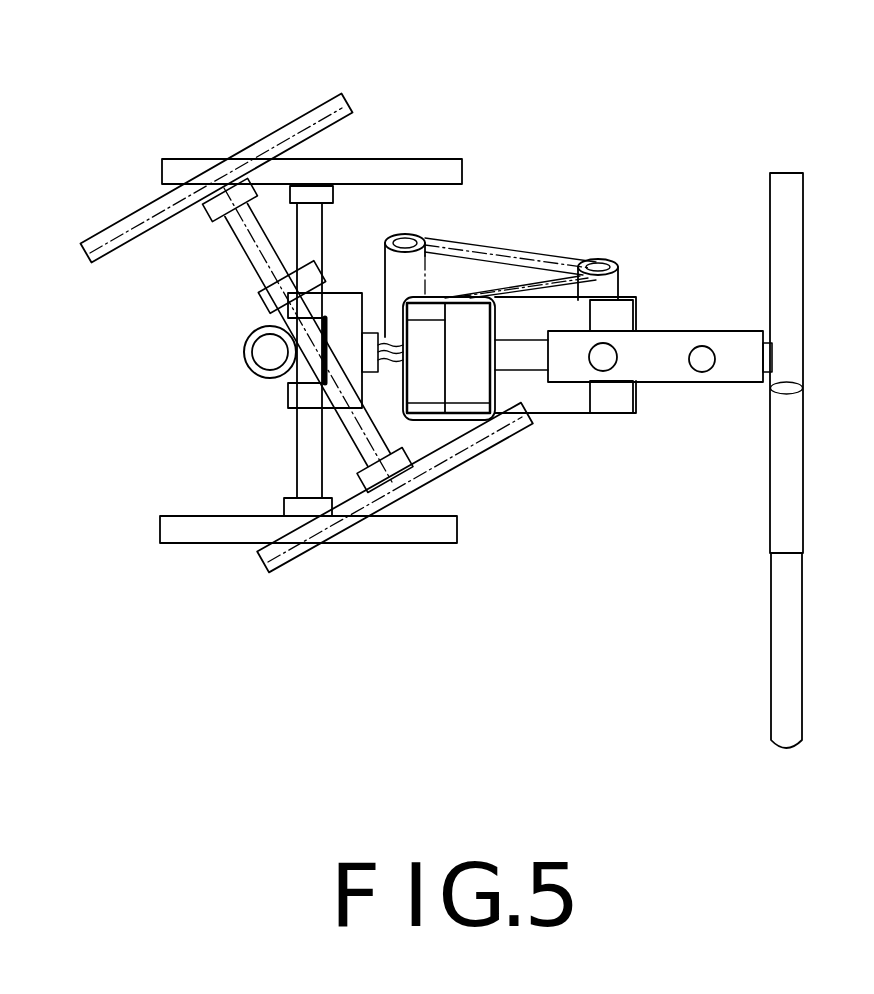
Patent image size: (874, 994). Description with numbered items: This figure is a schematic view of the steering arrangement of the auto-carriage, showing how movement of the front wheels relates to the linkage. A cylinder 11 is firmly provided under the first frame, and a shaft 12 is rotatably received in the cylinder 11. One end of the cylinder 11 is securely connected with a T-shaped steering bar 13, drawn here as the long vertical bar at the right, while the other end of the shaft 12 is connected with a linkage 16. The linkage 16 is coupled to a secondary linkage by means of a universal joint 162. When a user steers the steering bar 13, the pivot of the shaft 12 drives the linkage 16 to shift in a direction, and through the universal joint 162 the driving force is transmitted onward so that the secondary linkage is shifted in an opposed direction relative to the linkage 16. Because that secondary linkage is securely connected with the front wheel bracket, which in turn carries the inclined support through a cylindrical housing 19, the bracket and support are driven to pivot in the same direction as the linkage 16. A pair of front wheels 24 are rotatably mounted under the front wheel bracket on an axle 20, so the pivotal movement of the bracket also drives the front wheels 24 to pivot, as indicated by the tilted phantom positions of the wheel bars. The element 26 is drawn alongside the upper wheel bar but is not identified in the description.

The cylinder 11 is at (693, 335).
The shaft 12 is at (535, 353).
The steering bar 13 is at (795, 342).
The linkage 16 is at (487, 252).
The cylindrical housing 19 is at (255, 370).
The axle 20 is at (318, 228).
The front wheels 24 is at (470, 453).
The upper frame bar 26 is at (340, 92).
The universal joint 162 is at (383, 372).